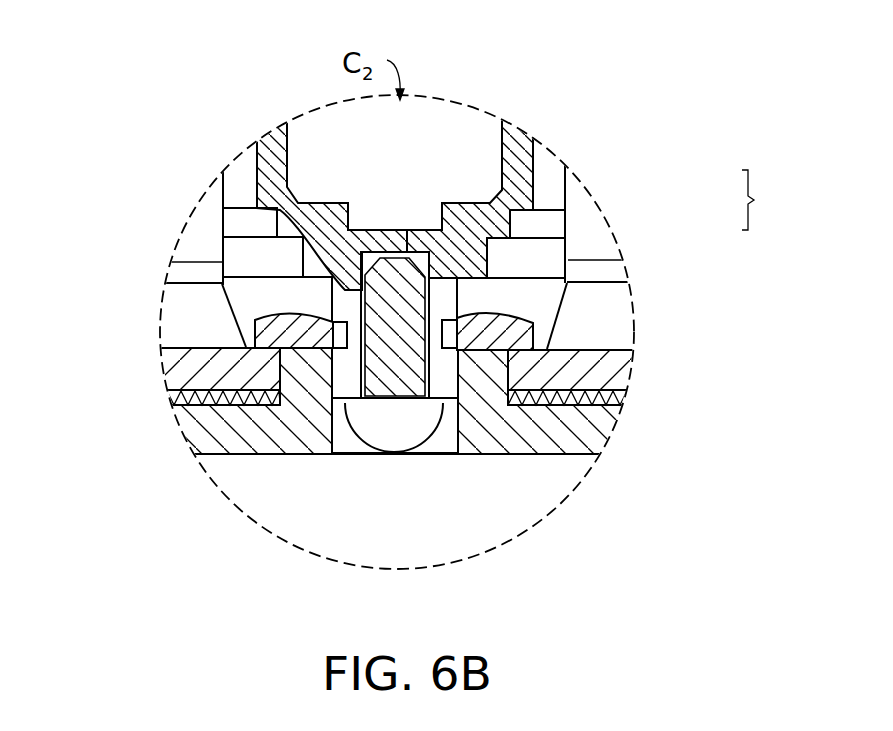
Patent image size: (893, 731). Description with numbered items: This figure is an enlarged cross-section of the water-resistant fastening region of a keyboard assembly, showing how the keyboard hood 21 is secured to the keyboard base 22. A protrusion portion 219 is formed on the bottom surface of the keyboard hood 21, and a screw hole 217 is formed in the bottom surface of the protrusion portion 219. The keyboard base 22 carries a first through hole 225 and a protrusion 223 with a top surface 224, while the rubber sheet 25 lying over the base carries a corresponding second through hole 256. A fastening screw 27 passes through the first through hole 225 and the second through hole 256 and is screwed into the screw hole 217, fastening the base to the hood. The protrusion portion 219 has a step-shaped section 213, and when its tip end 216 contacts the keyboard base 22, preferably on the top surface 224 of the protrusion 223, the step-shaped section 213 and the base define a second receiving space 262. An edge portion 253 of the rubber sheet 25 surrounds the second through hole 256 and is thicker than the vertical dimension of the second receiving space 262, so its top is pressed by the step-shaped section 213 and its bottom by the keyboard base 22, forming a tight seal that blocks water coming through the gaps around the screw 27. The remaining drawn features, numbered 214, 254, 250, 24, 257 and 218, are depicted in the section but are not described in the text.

The keyboard hood 21 is at (536, 161).
The step-shaped section 213 is at (776, 200).
The tip end 216 is at (444, 298).
The stepped housing section 214 is at (466, 345).
The protrusion portion 219 is at (362, 285).
The right inclined member 254 is at (516, 349).
The screw hole 217 is at (528, 338).
The thin plate 250 is at (610, 352).
The rubber sheet 25 is at (631, 366).
The adhesive layer 24 is at (628, 394).
The keyboard base 22 is at (614, 429).
The edge portion 253 is at (275, 330).
The left inclined member 257 is at (332, 325).
The second receiving space 262 is at (315, 322).
The second through hole 256 is at (339, 339).
The protrusion 223 is at (297, 370).
The top surface 224 is at (472, 382).
The first through hole 225 is at (360, 380).
The fastening screw 27 is at (418, 447).
The right notch 218 is at (447, 352).